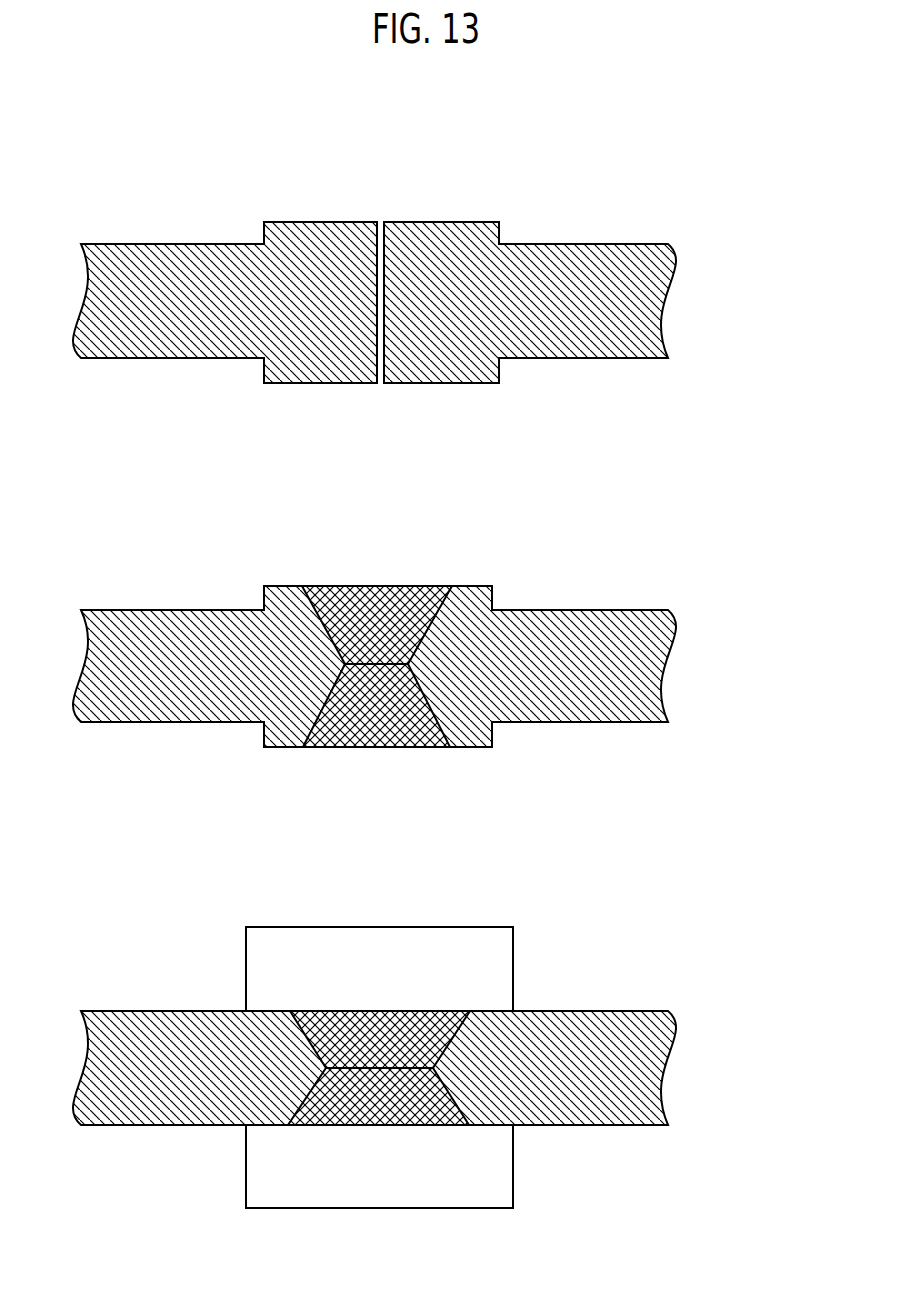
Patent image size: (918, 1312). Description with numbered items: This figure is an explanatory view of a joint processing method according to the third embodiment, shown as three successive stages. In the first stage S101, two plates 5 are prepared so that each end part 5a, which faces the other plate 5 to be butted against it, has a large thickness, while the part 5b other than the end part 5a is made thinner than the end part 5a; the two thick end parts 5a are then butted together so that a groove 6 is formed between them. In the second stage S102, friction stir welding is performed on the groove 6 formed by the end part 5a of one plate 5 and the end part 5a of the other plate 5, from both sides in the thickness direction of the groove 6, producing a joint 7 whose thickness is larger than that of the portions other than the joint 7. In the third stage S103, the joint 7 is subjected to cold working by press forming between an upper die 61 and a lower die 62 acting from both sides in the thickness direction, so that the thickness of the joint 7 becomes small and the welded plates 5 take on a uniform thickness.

The plate 5 is at (153, 242).
The end part 5a is at (305, 220).
The part other than the end part 5b is at (203, 243).
The groove 6 is at (378, 210).
The joint 7 is at (378, 583).
The upper die 61 is at (513, 962).
The lower die 62 is at (513, 1165).
The step of thickening the end part S101 is at (694, 217).
The step of friction stir welding the groove S102 is at (694, 600).
The step of cold working the joint S103 is at (694, 1000).